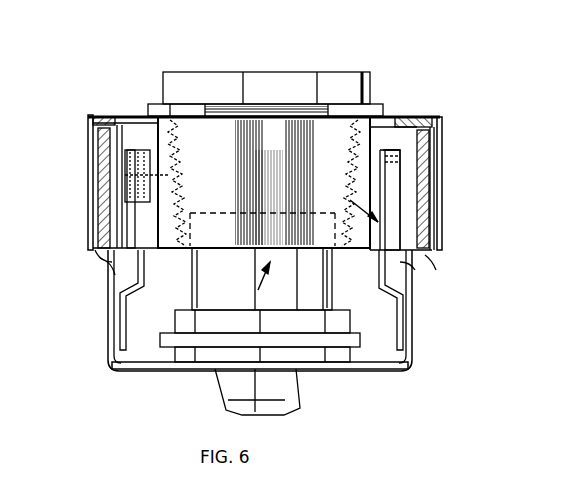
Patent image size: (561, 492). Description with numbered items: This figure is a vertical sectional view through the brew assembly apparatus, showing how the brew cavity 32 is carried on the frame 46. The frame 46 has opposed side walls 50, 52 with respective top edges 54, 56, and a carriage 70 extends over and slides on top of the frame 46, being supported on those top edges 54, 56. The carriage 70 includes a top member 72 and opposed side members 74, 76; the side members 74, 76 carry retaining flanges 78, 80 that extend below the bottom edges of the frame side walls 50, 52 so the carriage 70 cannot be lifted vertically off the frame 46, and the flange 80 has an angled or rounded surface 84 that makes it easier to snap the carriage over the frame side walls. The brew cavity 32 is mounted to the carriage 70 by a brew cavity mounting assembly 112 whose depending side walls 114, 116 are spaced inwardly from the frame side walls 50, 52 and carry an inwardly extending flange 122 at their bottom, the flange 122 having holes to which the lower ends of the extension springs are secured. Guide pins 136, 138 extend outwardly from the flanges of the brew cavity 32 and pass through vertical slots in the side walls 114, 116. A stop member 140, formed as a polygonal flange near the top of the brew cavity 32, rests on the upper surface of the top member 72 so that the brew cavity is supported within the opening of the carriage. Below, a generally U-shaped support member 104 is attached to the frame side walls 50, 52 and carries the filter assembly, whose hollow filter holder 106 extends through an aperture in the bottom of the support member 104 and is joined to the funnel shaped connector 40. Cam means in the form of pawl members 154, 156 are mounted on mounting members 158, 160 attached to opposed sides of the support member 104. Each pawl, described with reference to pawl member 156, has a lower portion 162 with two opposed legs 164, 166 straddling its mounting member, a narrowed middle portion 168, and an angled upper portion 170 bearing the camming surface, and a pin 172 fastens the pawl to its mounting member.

The brew cavity 32 is at (286, 72).
The stop member 140 is at (195, 104).
The guide pin 138 is at (264, 182).
The guide pin 136 is at (358, 160).
The pawl member 156 is at (262, 221).
The narrowed middle portion 168 is at (458, 186).
The frame 46 is at (93, 170).
The side member 76 is at (93, 205).
The pin 172 is at (93, 120).
The side wall 52 is at (100, 228).
The top edge 56 is at (98, 150).
The lower portion 162 is at (120, 245).
The flange 80 is at (96, 255).
The rounded surface 84 is at (105, 270).
The side wall 116 is at (165, 118).
The upper portion 170 is at (127, 140).
The carriage 70 is at (440, 112).
The top edge 54 is at (440, 134).
The side member 74 is at (430, 250).
The side wall 50 is at (425, 225).
The side wall 114 is at (385, 150).
The top member 72 is at (415, 125).
The pawl member 154 is at (352, 210).
The flange 78 is at (436, 265).
The leg 166 is at (405, 272).
The leg 164 is at (388, 256).
The mounting member 160 is at (126, 312).
The brew cavity mounting assembly 112 is at (266, 286).
The inwardly extending flange 122 is at (197, 252).
The mounting member 158 is at (400, 312).
The filter holder 106 is at (205, 362).
The support member 104 is at (370, 371).
The funnel shaped connector 40 is at (302, 380).